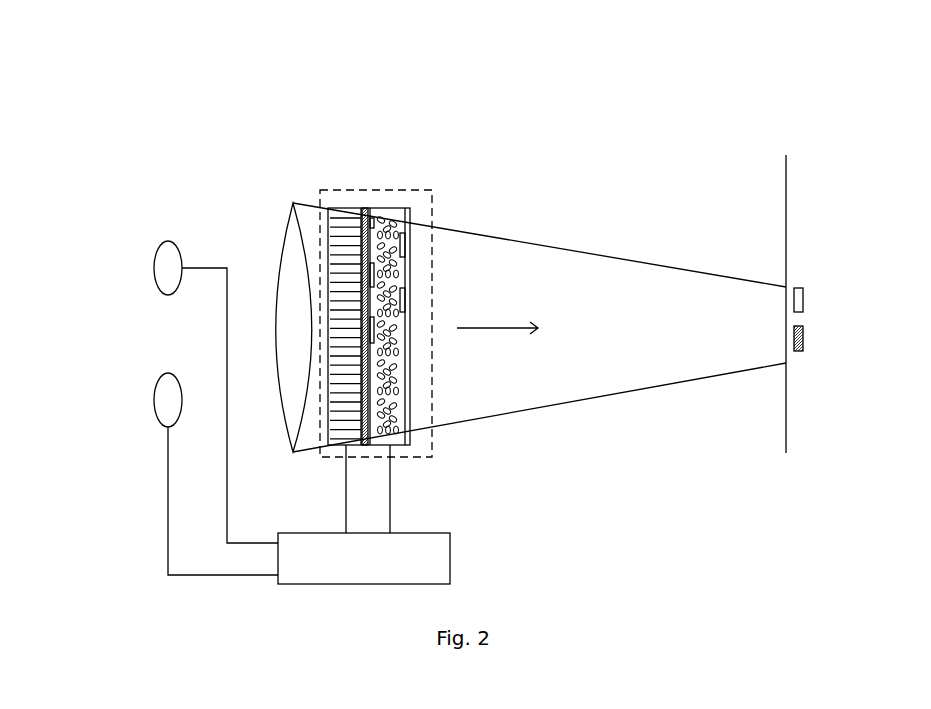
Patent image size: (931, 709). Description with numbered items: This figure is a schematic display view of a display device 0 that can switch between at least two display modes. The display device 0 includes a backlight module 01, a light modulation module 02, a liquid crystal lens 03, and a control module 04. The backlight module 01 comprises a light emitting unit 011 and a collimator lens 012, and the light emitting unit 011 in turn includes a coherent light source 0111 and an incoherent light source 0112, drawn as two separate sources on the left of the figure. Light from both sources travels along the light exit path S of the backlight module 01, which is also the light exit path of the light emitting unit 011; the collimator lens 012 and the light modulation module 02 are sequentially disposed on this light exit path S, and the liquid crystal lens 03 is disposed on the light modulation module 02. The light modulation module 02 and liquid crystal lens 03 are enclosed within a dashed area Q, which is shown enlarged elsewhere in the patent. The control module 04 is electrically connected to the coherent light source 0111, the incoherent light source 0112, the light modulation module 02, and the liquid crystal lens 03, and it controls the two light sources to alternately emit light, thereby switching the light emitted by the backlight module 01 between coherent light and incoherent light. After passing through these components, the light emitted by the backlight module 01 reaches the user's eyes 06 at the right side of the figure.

The display device 0 is at (306, 57).
The backlight module 01 is at (207, 160).
The light emitting unit 011 is at (102, 207).
The coherent light source 0111 is at (153, 271).
The incoherent light source 0112 is at (153, 399).
The collimator lens 012 is at (283, 232).
The light modulation module 02 is at (330, 208).
The liquid crystal lens 03 is at (405, 216).
The control module 04 is at (450, 558).
The user's eyes 06 is at (803, 290).
The area Q is at (432, 442).
The light exit path S is at (518, 328).